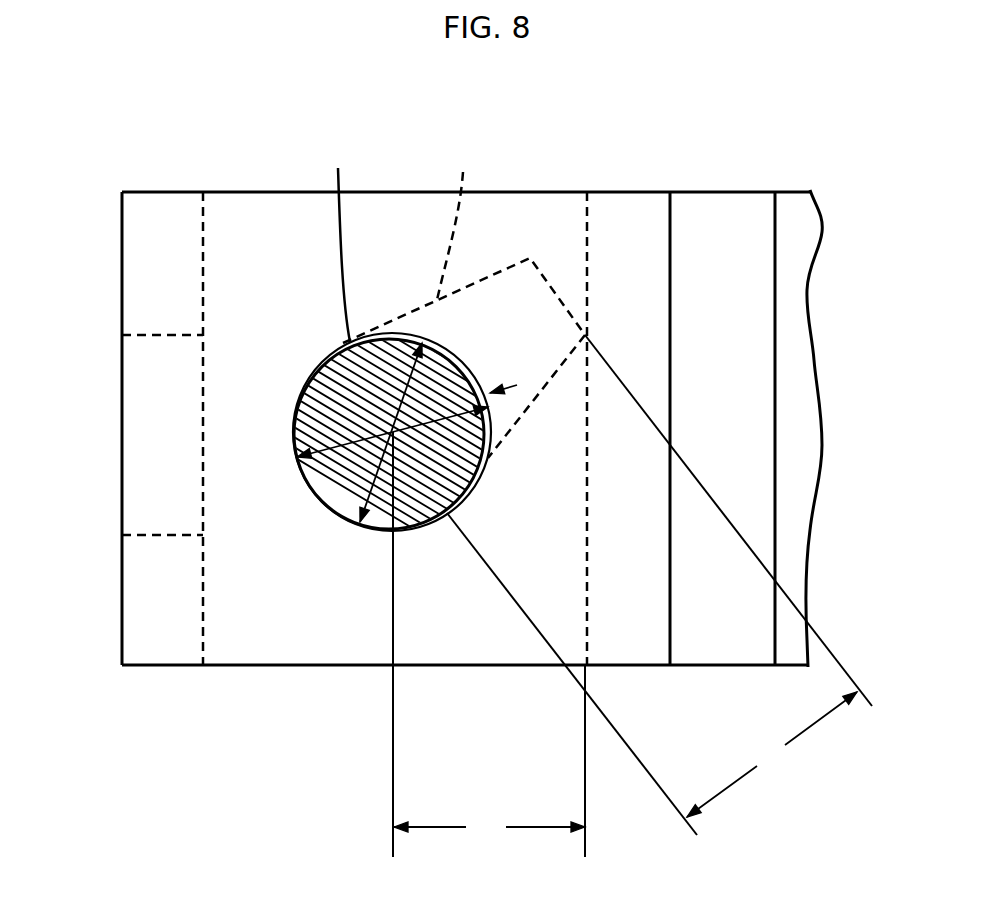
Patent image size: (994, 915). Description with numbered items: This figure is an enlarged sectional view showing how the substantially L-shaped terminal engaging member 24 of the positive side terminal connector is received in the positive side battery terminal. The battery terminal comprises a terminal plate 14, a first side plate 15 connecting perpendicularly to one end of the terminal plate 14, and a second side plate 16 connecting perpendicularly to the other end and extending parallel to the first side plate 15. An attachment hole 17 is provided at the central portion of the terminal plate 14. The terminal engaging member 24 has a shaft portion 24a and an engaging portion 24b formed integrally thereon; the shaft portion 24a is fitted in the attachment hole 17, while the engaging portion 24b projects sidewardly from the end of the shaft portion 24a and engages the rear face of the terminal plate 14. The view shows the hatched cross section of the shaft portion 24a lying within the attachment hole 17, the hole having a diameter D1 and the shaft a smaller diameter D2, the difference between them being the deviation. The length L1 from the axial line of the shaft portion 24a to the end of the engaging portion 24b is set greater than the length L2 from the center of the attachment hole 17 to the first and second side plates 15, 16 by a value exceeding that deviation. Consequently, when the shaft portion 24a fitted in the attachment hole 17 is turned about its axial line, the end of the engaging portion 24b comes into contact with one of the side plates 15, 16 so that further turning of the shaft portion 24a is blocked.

The terminal plate 14 is at (515, 225).
The first side plate 15 is at (672, 293).
The second side plate 16 is at (120, 268).
The attachment hole 17 is at (488, 462).
The terminal engaging member 24 is at (493, 140).
The shaft portion 24a is at (338, 242).
The engaging portion 24b is at (459, 221).
The diameter of the attachment hole D1 is at (318, 372).
The diameter of the shaft portion D2 is at (338, 494).
The length from the axial line of the shaft portion to the end of the engaging porti L1 is at (772, 754).
The length from the center of the attachment hole to the side plates L2 is at (489, 761).